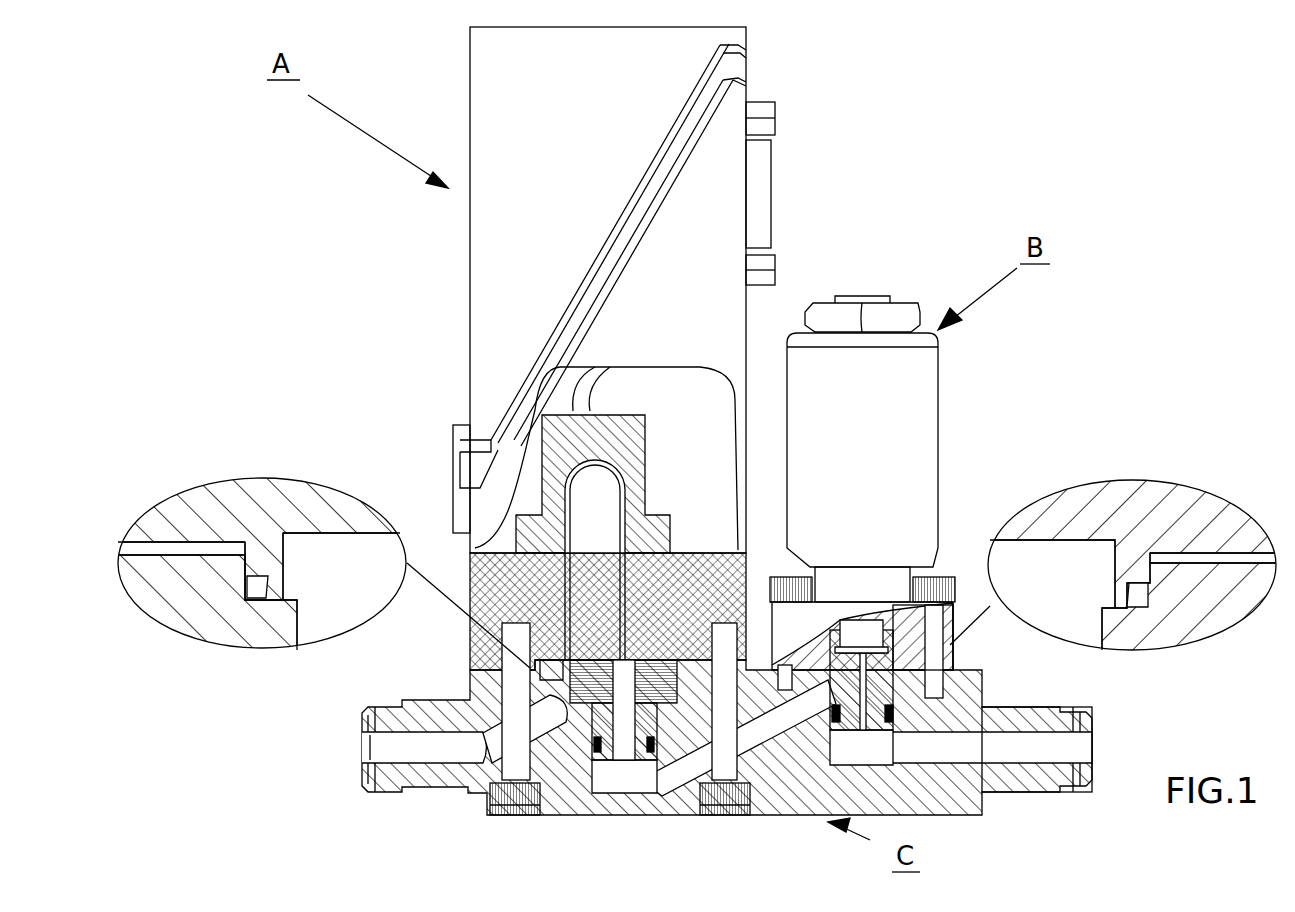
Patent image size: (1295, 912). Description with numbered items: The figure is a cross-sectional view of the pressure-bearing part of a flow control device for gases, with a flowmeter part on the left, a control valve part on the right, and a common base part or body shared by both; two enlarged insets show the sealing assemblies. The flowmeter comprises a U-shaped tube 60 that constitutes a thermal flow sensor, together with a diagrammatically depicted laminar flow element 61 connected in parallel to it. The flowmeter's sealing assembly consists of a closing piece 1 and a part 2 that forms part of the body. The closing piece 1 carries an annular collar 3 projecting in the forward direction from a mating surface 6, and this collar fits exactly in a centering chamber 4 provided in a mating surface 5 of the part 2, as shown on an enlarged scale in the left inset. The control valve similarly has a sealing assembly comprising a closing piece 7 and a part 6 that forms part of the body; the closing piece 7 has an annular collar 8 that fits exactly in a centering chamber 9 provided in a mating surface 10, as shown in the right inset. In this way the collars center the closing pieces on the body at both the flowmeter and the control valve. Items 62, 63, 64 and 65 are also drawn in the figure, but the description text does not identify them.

The closing piece 1 is at (470, 649).
The part 2 is at (478, 806).
The annular collar 3 is at (285, 553).
The centering chamber 4 is at (290, 586).
The mating surface 5 is at (125, 593).
The part 6 is at (945, 722).
The closing piece 7 is at (927, 672).
The annular collar 8 is at (1132, 563).
The centering chamber 9 is at (1112, 582).
The mating surface 10 is at (1240, 560).
The U-shaped tube 60 is at (625, 492).
The laminar flow element 61 is at (590, 686).
The housing A 62 is at (470, 72).
The cartridge 63 is at (895, 395).
The plate 64 is at (187, 540).
The plate 65 is at (1180, 553).